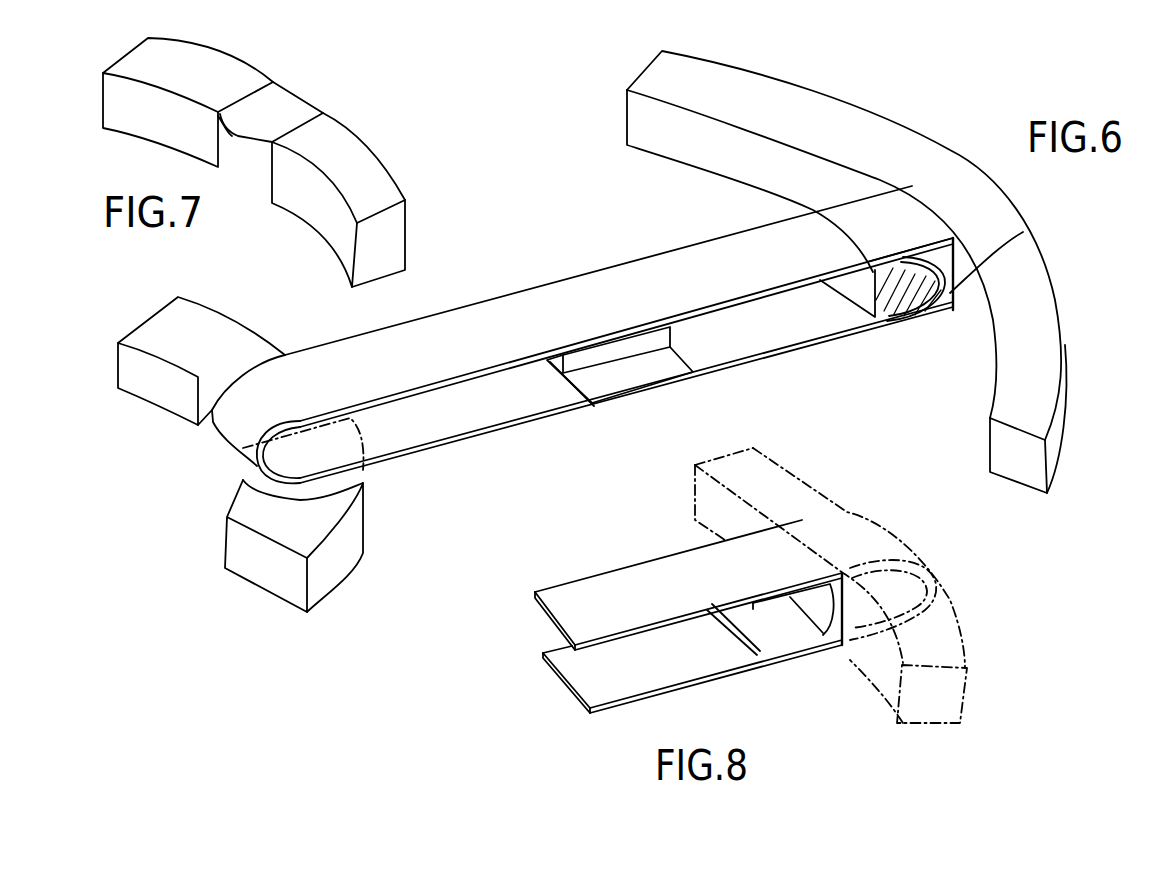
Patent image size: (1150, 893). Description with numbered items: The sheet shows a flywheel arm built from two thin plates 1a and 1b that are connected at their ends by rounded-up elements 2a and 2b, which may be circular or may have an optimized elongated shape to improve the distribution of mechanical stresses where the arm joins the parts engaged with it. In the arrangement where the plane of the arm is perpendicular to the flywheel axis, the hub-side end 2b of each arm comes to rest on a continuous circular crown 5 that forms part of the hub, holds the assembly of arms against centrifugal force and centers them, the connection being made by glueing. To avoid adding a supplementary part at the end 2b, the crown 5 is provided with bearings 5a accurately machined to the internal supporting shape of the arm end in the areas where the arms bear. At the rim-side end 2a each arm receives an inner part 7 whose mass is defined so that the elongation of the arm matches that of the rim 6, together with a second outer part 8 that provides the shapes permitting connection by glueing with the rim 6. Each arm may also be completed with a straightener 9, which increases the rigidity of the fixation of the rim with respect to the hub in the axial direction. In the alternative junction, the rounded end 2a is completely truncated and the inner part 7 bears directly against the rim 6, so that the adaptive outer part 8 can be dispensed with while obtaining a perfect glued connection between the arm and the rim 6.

In FIG. 6, the thin plate 1a is at (640, 271).
In FIG. 8, the thin plate 1a is at (677, 575).
In FIG. 6, the thin plate 1b is at (500, 415).
In FIG. 8, the thin plate 1b is at (690, 661).
In FIG. 6, the rounded end element 2a is at (1023, 232).
In FIG. 8, the rounded end element 2a is at (937, 590).
In FIG. 6, the rounded end element 2b is at (257, 470).
In FIG. 7, the circular crown 5 is at (232, 77).
In FIG. 6, the circular crown 5 is at (323, 527).
In FIG. 7, the bearing 5a is at (260, 122).
In FIG. 6, the rim 6 is at (862, 137).
In FIG. 8, the rim 6 is at (806, 505).
In FIG. 6, the inner part 7 is at (950, 225).
In FIG. 8, the inner part 7 is at (853, 644).
In FIG. 6, the outer part 8 is at (900, 223).
In FIG. 6, the straightener 9 is at (669, 364).